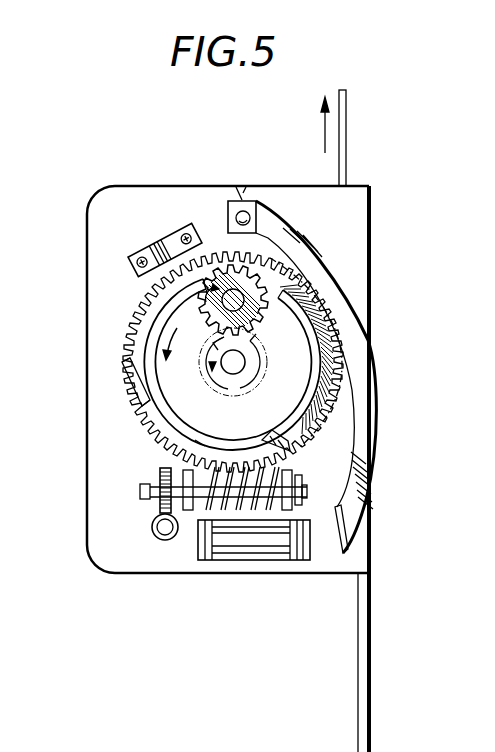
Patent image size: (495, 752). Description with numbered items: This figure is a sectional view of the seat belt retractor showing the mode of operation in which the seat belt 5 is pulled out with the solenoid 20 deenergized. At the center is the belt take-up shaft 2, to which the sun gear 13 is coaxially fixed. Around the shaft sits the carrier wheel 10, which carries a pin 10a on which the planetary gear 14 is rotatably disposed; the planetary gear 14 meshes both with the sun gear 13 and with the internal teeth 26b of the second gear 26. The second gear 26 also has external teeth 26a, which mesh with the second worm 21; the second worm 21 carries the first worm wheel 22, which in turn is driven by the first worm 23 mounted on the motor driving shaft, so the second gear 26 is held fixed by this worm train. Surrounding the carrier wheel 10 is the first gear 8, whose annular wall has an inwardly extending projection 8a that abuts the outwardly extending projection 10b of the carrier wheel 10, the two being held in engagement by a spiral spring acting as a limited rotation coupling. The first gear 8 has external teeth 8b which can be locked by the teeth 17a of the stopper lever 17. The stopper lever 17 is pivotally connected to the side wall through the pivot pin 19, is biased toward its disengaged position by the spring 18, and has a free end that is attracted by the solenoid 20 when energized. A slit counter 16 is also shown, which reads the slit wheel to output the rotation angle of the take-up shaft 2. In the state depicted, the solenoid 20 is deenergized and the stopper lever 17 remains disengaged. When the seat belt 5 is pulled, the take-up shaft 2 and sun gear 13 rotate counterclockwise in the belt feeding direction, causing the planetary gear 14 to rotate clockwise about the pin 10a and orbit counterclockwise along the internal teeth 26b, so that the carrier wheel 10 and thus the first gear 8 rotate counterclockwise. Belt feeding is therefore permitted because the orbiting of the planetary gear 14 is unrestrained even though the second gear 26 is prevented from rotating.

The belt take-up shaft 2 is at (228, 371).
The seat belt 5 is at (348, 130).
The first gear 8 is at (330, 394).
The inwardly extending projection 8a is at (200, 445).
The external teeth 8b is at (332, 345).
The carrier wheel 10 is at (280, 333).
The pin 10a is at (213, 256).
The outwardly extending projection 10b is at (280, 449).
The sun gear 13 is at (247, 373).
The planetary gear 14 is at (266, 284).
The slit counter 16 is at (162, 242).
The stopper lever 17 is at (363, 437).
The teeth 17a is at (348, 372).
The spring 18 is at (239, 187).
The pivot pin 19 is at (250, 218).
The solenoid 20 is at (250, 557).
The second worm 21 is at (200, 506).
The first worm wheel 22 is at (155, 508).
The first worm 23 is at (152, 531).
The second gear 26 is at (128, 380).
The external teeth 26a is at (125, 363).
The internal teeth 26b is at (147, 403).